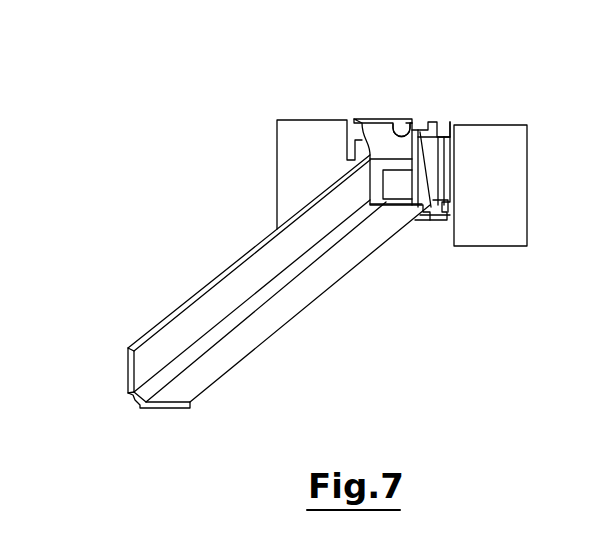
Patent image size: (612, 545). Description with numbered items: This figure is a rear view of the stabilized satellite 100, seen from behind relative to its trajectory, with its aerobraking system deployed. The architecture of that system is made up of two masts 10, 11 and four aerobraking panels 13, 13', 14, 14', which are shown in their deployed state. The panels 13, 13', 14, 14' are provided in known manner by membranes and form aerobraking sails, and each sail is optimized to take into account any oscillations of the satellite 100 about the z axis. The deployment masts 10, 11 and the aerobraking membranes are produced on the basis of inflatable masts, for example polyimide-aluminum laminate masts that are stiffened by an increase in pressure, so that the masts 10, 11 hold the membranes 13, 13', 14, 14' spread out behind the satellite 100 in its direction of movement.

The mast 10 is at (130, 396).
The mast 11 is at (401, 130).
The panel 13 is at (221, 273).
The panel 13' is at (288, 336).
The panel 14 is at (310, 125).
The panel 14' is at (504, 171).
The stabilized satellite 100 is at (432, 218).